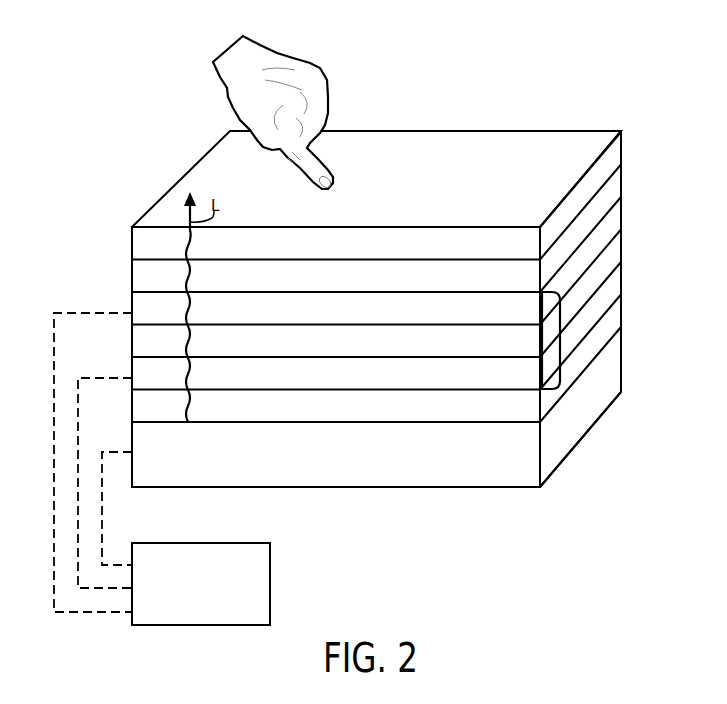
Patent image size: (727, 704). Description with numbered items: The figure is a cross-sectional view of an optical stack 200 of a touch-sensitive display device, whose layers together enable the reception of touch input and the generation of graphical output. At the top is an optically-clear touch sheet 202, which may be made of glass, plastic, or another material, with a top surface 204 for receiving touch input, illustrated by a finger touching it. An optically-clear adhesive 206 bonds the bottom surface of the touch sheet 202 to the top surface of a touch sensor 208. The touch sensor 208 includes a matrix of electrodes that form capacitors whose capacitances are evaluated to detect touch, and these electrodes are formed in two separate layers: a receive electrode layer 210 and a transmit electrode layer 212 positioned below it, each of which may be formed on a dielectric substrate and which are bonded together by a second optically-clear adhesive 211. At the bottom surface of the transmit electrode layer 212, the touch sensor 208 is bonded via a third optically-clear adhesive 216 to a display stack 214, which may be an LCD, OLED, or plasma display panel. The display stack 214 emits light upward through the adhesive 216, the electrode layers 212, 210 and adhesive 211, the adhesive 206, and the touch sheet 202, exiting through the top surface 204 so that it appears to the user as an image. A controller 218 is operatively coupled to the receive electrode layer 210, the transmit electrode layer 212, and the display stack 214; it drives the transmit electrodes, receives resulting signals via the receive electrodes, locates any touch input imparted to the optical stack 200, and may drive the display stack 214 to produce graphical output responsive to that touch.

The optical stack 200 is at (442, 83).
The touch sheet 202 is at (418, 253).
The top surface 204 is at (509, 205).
The optically-clear adhesive 206 is at (374, 286).
The touch sensor 208 is at (562, 337).
The receive electrode layer 210 is at (366, 319).
The second optically-clear adhesive 211 is at (369, 351).
The transmit electrode layer 212 is at (365, 383).
The display stack 214 is at (423, 465).
The third optically-clear adhesive 216 is at (374, 416).
The controller 218 is at (216, 608).